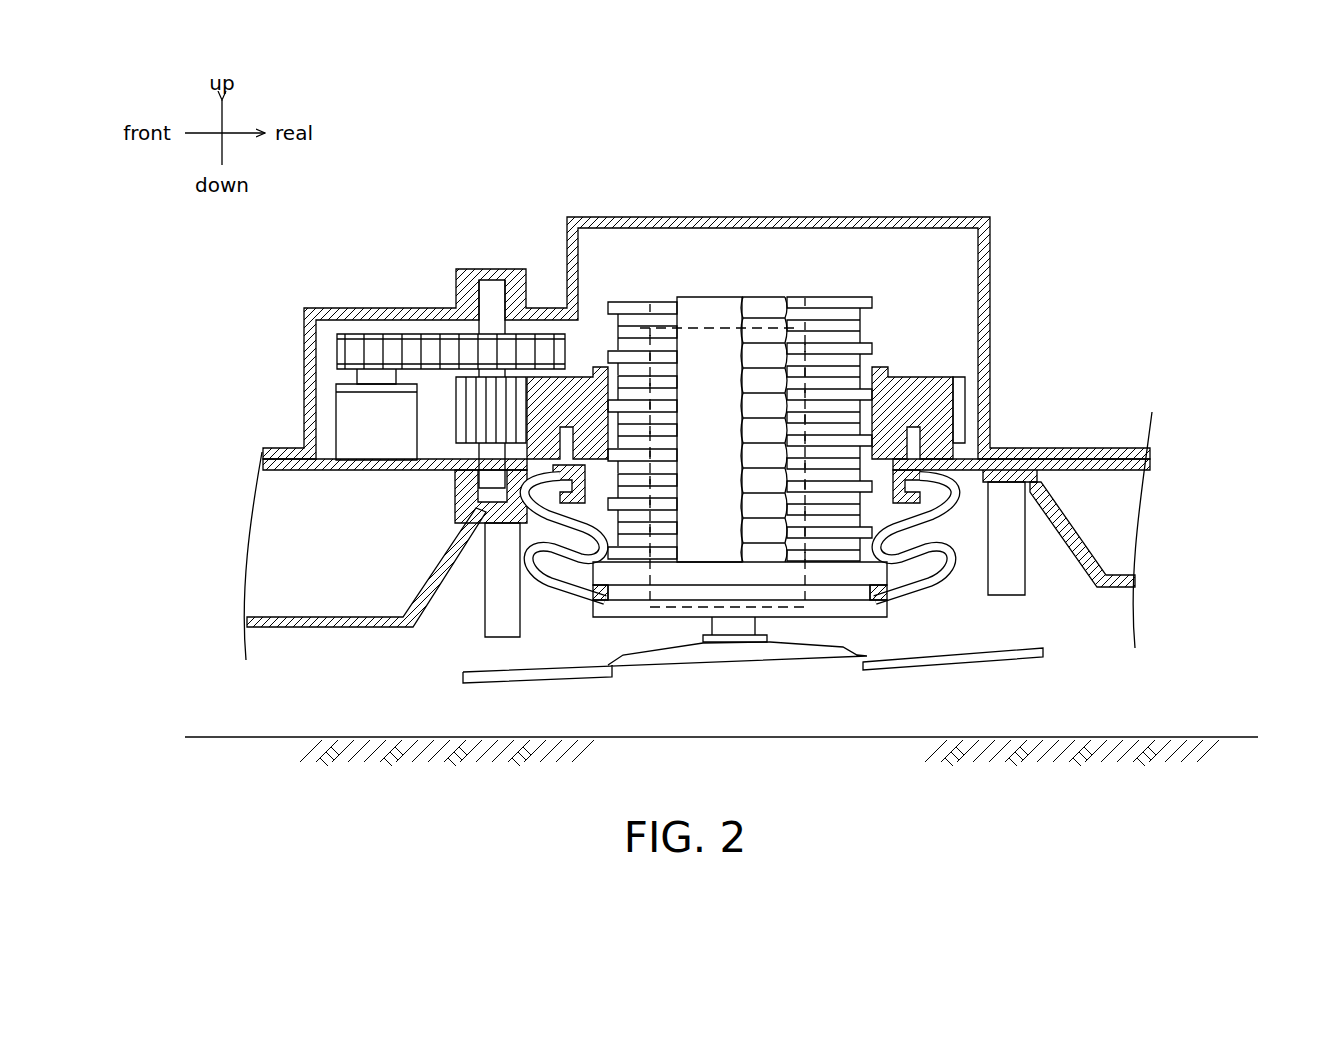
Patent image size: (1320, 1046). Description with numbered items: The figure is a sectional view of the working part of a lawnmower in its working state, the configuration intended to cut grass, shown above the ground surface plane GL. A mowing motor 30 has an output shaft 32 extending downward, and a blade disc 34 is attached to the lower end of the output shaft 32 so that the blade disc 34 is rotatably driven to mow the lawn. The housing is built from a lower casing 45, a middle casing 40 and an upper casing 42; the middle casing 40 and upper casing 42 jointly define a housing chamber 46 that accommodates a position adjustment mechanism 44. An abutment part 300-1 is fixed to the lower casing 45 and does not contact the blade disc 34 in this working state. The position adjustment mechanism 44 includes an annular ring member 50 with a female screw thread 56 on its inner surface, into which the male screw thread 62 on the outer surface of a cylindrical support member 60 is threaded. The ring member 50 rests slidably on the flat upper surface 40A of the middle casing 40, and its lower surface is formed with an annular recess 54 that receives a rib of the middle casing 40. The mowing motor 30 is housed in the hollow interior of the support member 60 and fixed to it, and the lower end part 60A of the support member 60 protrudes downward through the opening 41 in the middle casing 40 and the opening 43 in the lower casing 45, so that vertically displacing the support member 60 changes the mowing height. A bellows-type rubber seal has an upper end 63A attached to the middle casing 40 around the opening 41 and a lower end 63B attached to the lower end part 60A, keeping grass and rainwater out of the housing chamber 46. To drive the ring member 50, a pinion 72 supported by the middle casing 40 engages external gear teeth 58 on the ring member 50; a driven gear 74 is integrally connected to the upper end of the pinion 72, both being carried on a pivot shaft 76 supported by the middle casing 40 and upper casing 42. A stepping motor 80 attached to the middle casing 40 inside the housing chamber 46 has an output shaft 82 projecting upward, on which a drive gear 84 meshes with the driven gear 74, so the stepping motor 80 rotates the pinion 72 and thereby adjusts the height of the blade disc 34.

The mowing motor 30 is at (803, 360).
The output shaft 32 is at (737, 635).
The blade disc 34 is at (814, 660).
The middle casing 40 is at (266, 463).
The flat upper surface 40A is at (960, 380).
The central opening 41 is at (578, 540).
The upper casing 42 is at (390, 313).
The central opening 43 is at (532, 560).
The position adjustment mechanism 44 is at (885, 307).
The lower casing 45 is at (368, 628).
The housing chamber 46 is at (921, 243).
The annular ring member 50 is at (945, 365).
The annular recess 54 is at (912, 426).
The female screw thread 56 is at (620, 400).
The external gear teeth 58 is at (960, 400).
The cylindrical support member 60 is at (700, 303).
The lower end part 60A is at (614, 607).
The male screw thread 62 is at (843, 317).
The upper end 63A is at (990, 445).
The lower end 63B is at (880, 605).
The pinion 72 is at (472, 408).
The driven gear 74 is at (445, 340).
The pivot shaft 76 is at (488, 488).
The stepping motor 80 is at (357, 440).
The output shaft 82 is at (366, 376).
The drive gear 84 is at (350, 340).
The abutment part 300-1 is at (497, 625).
The ground surface plane GL is at (1210, 736).